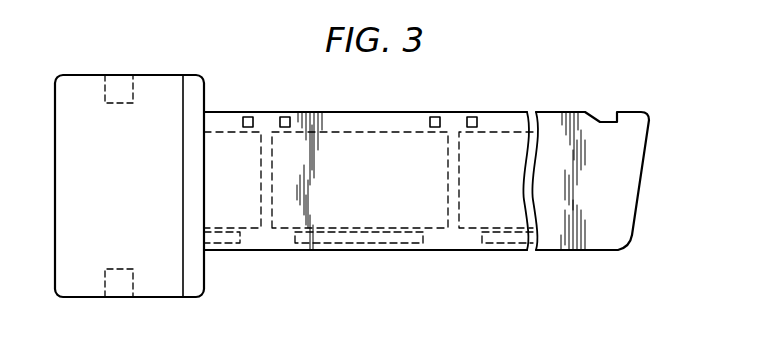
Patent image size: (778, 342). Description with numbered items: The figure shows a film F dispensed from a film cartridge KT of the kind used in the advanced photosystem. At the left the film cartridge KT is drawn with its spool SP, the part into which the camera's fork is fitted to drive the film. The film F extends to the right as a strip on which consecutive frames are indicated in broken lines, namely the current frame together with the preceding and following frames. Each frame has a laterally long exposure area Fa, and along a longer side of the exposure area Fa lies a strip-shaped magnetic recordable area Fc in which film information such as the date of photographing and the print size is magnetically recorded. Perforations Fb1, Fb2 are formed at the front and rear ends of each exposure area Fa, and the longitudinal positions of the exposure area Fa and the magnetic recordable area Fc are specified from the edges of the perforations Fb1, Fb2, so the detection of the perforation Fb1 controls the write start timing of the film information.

The film cartridge KT is at (162, 82).
The spool SP is at (120, 104).
The film F is at (631, 112).
The exposure area Fa is at (433, 222).
The perforation Fb1 is at (247, 116).
The perforation Fb2 is at (285, 116).
The magnetic recordable area Fc is at (342, 243).